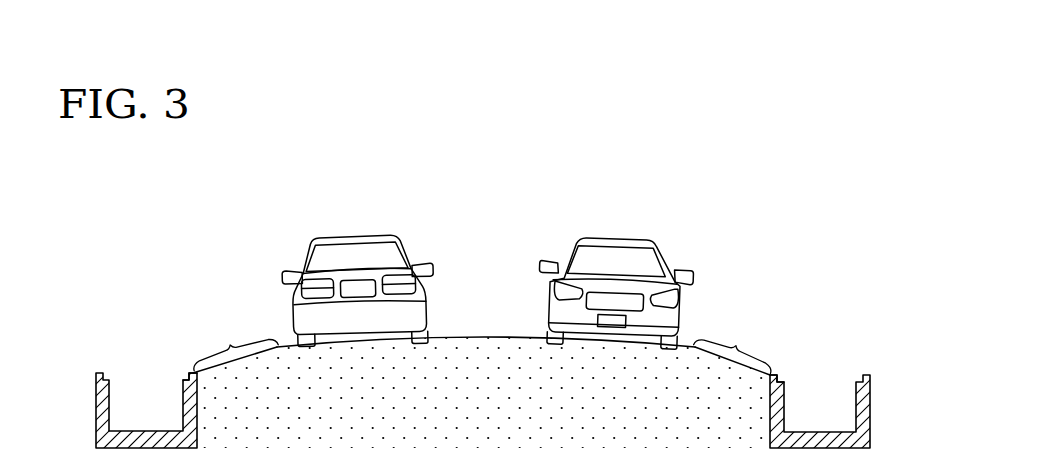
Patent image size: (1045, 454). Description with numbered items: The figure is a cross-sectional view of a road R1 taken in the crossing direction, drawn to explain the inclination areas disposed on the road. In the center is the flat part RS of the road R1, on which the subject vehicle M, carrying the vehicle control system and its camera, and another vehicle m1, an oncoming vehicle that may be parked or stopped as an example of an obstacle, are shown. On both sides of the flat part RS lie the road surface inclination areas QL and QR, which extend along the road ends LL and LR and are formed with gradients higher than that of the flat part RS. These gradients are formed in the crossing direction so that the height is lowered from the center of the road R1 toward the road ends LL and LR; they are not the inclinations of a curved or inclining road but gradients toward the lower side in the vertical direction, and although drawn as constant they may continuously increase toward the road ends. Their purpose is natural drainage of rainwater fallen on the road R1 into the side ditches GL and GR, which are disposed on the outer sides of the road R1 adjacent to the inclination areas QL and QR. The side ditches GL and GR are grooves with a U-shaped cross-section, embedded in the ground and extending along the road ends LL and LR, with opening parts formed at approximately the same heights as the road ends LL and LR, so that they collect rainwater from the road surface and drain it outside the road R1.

The subject vehicle M is at (357, 238).
The another vehicle m1 is at (618, 238).
The road R1 is at (514, 254).
The flat part of the road RS is at (484, 337).
The road surface inclination area QL is at (217, 321).
The road surface inclination area QR is at (745, 328).
The road end LL is at (190, 372).
The road end LR is at (775, 371).
The side ditch GL is at (95, 366).
The side ditch GR is at (870, 366).